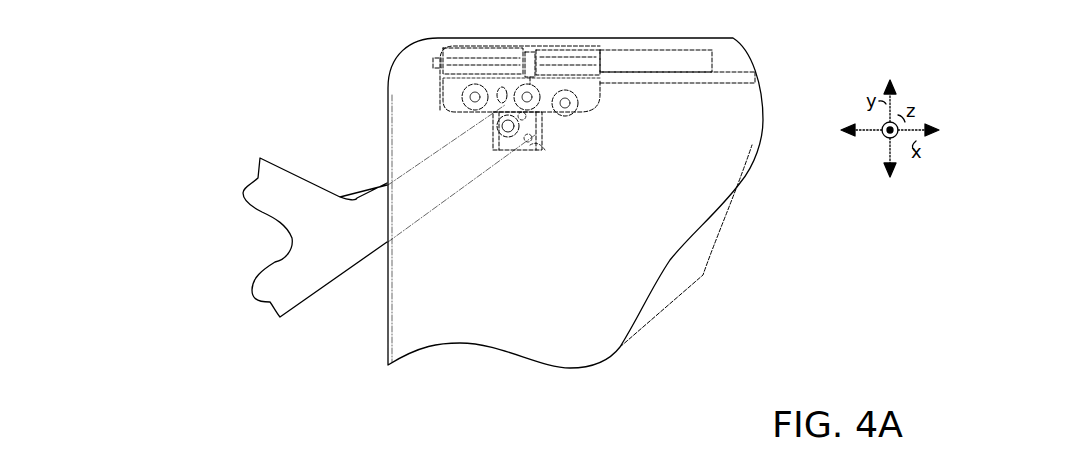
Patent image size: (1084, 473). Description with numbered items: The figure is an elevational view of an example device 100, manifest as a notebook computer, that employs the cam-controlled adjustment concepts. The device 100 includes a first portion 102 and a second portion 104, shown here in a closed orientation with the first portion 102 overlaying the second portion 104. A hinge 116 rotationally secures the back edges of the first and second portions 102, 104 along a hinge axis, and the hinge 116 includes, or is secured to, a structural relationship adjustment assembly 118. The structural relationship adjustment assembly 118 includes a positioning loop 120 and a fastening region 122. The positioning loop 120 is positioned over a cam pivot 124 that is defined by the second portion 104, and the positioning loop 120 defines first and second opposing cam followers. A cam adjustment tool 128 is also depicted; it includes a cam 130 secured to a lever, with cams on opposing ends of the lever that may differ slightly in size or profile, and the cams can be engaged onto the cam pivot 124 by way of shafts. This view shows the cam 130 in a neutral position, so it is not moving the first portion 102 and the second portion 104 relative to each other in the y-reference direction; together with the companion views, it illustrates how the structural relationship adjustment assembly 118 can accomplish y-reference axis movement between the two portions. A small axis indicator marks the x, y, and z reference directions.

The device 100 is at (502, 185).
The first portion 102 is at (571, 344).
The second portion 104 is at (703, 275).
The hinge 116 is at (437, 67).
The structural relationship adjustment assembly 118 is at (408, 103).
The positioning loop 120 is at (541, 150).
The fastening region 122 is at (440, 92).
The cam pivot 124 is at (503, 127).
The cam adjustment tool 128 is at (297, 350).
The cam 130 is at (497, 142).